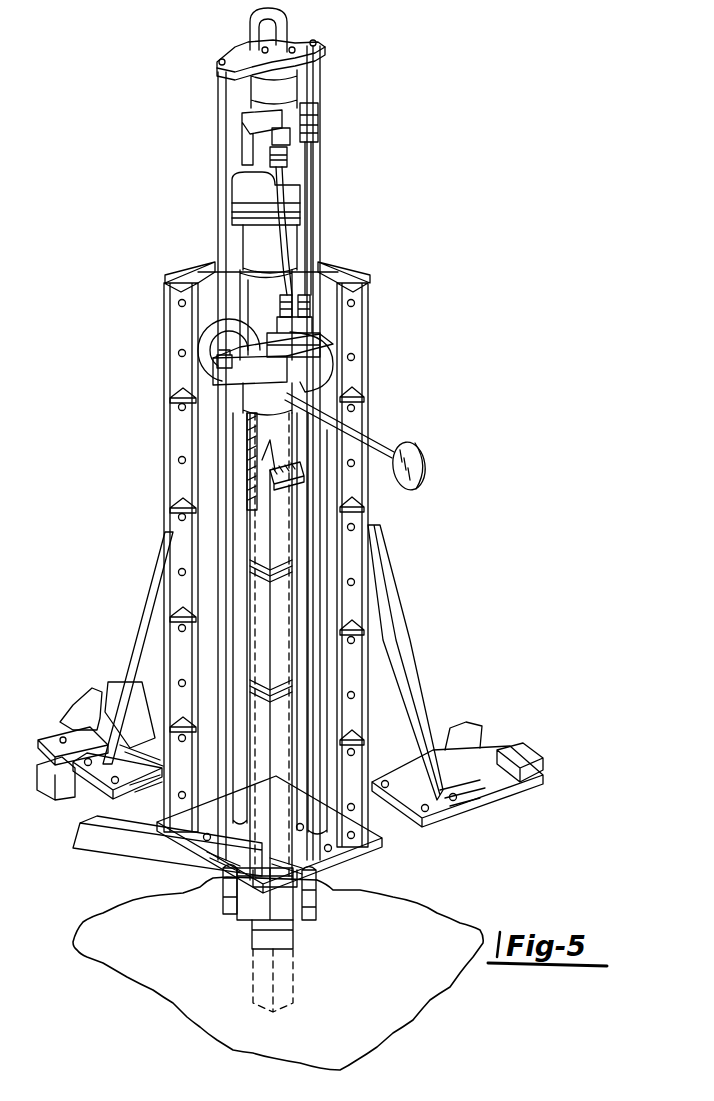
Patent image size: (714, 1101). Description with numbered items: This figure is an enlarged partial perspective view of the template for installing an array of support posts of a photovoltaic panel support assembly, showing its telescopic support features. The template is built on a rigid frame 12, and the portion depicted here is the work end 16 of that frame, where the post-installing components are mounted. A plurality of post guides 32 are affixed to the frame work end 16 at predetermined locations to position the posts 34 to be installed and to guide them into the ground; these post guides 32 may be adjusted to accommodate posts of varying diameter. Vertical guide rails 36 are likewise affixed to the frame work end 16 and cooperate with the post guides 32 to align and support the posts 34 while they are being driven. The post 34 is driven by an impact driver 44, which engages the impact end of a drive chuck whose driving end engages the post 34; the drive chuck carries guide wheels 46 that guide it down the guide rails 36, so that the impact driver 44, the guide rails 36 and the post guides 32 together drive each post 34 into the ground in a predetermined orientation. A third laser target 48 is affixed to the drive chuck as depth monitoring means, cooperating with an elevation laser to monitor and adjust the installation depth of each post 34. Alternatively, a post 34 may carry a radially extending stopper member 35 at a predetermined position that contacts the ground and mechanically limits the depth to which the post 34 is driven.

The rigid frame 12 is at (505, 792).
The work end 16 is at (64, 799).
The post guides 32 is at (303, 918).
The posts 34 is at (290, 537).
The stopper member 35 is at (303, 469).
The vertical guide rails 36 is at (165, 304).
The impact driver 44 is at (318, 94).
The guide wheels 46 is at (330, 380).
The third laser target 48 is at (424, 474).